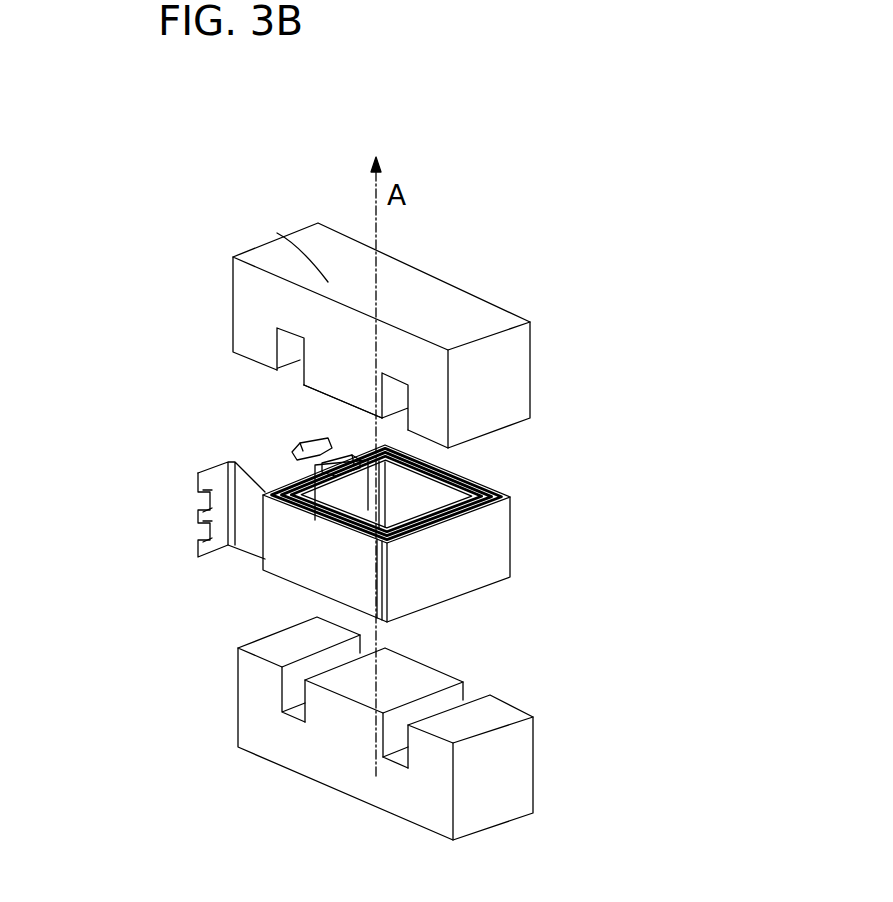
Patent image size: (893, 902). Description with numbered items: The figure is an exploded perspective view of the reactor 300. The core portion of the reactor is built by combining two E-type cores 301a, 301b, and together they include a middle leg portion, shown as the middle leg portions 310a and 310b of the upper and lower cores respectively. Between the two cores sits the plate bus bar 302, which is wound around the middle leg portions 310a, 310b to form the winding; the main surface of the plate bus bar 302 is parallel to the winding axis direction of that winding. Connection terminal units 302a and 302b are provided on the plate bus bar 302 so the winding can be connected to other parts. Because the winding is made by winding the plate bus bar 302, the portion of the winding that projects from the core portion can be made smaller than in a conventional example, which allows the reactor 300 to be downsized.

The reactor 300 is at (246, 156).
The E-type core 301a is at (233, 257).
The middle leg portion 310a is at (323, 367).
The plate bus bar 302 is at (497, 488).
The connection terminal unit 302a is at (322, 457).
The connection terminal unit 302b is at (203, 512).
The E-type core 301b is at (283, 667).
The middle leg portion 310b is at (342, 715).